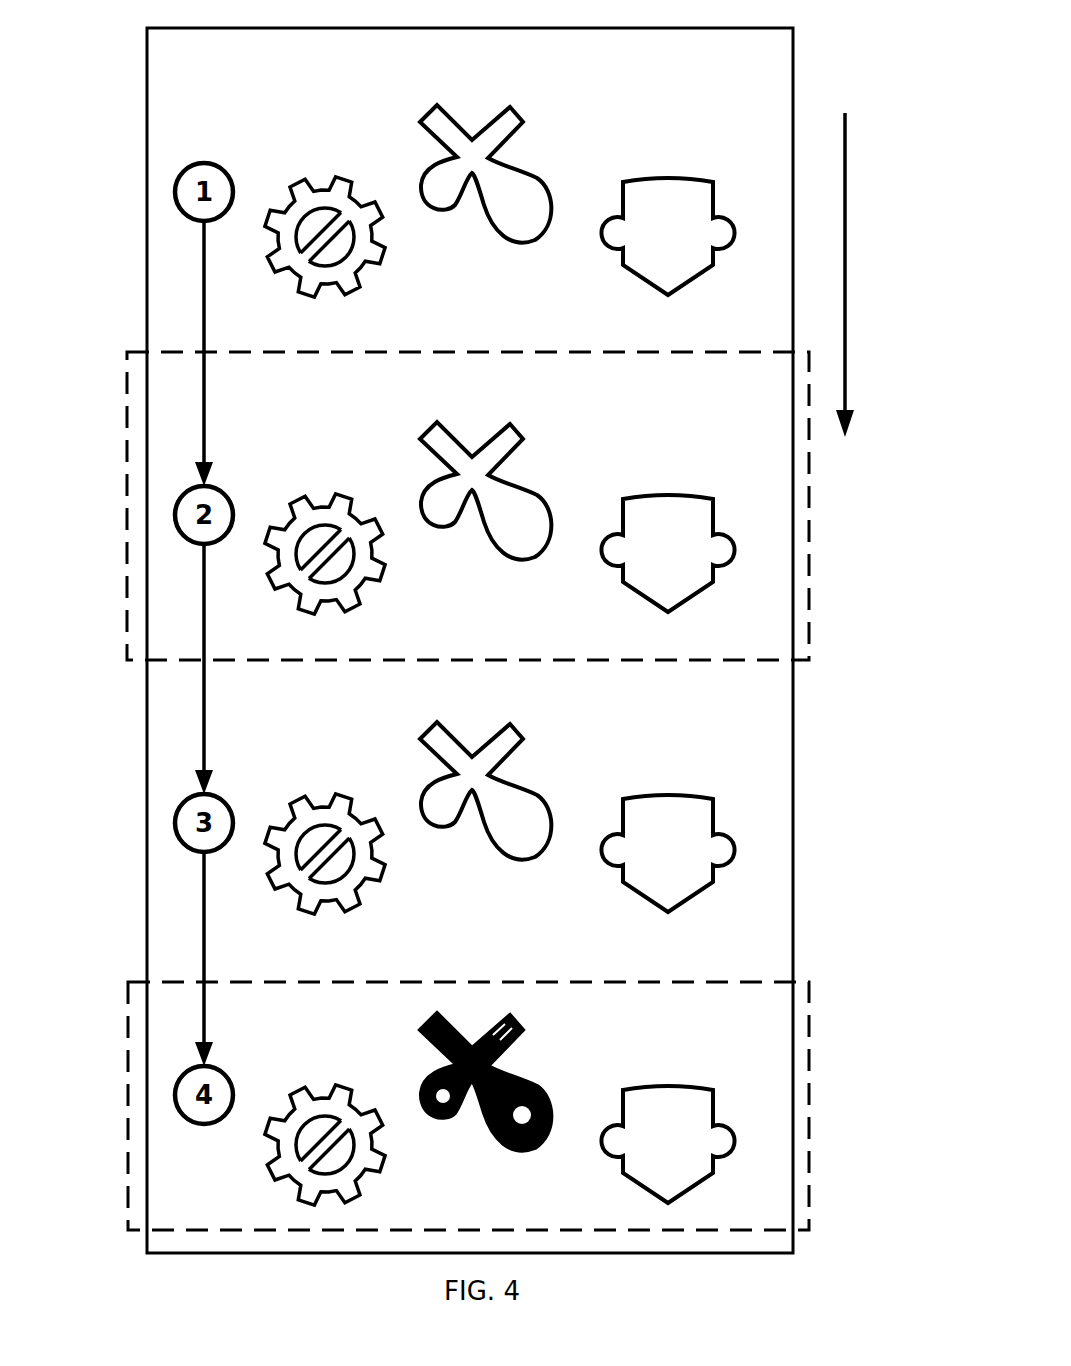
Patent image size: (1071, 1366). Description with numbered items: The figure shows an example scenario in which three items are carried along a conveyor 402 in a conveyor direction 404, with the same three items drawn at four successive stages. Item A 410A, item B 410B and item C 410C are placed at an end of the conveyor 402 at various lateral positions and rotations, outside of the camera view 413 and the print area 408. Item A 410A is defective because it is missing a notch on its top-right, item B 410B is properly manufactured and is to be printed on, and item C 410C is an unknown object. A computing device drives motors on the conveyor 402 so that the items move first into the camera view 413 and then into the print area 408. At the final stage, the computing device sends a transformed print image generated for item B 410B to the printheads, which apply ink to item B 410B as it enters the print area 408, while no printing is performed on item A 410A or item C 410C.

The conveyor 402 is at (470, 640).
The conveyor direction 404 is at (892, 275).
The print area 408 is at (128, 1008).
The camera view 413 is at (127, 372).
The item A 410A is at (324, 1090).
The item B 410B is at (522, 1093).
The item C 410C is at (678, 1105).